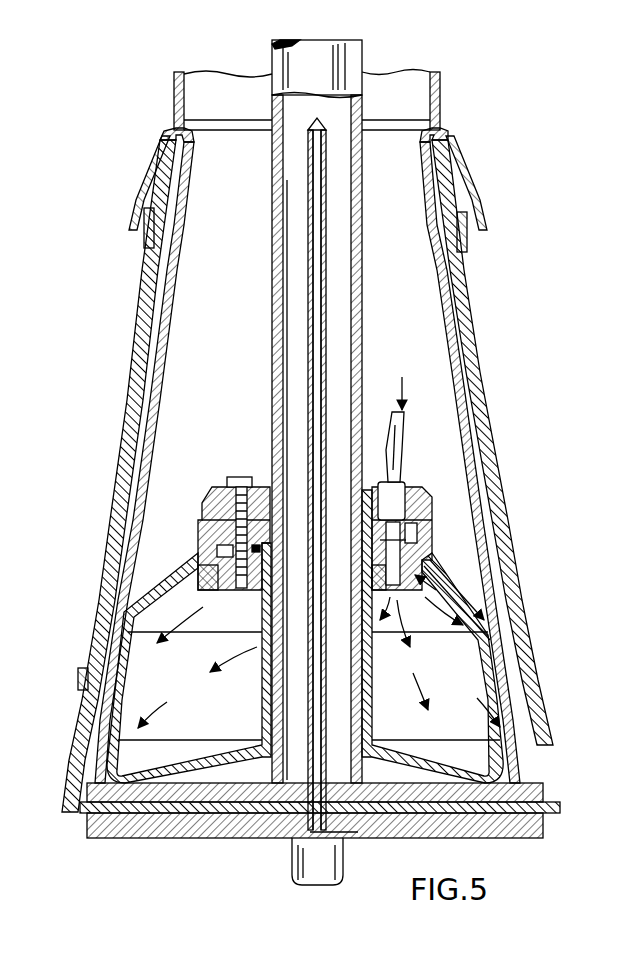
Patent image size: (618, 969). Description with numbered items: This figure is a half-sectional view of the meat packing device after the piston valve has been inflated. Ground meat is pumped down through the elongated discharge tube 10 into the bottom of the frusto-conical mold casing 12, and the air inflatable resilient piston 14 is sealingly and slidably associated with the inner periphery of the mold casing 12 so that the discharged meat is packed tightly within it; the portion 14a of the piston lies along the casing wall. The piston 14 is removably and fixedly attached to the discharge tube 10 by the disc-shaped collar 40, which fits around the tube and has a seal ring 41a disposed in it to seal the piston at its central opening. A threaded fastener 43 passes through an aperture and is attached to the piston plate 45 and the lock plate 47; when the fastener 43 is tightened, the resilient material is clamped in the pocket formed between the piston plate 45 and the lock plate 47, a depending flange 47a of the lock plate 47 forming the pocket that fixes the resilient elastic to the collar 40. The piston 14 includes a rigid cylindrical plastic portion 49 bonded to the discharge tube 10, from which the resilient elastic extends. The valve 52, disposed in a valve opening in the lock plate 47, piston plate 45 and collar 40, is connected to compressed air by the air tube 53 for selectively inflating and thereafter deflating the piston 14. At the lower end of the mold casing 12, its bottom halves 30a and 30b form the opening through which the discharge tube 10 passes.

The discharge tube 10 is at (363, 278).
The mold casing 12 is at (487, 372).
The air inflatable resilient piston 14 is at (163, 582).
The liner side wall portion 14a is at (527, 665).
The bottom half of mold casing 30a is at (175, 813).
The bottom half of mold casing 30b is at (545, 830).
The disc-shaped collar 40 is at (435, 580).
The seal ring 41a is at (420, 537).
The threaded fastener 43 is at (217, 487).
The piston plate 45 is at (207, 497).
The lock plate 47 is at (200, 527).
The depending flange 47a is at (200, 552).
The rigid cylindrical plastic portion 49 is at (267, 683).
The valve 52 is at (390, 500).
The air tube 53 is at (403, 433).